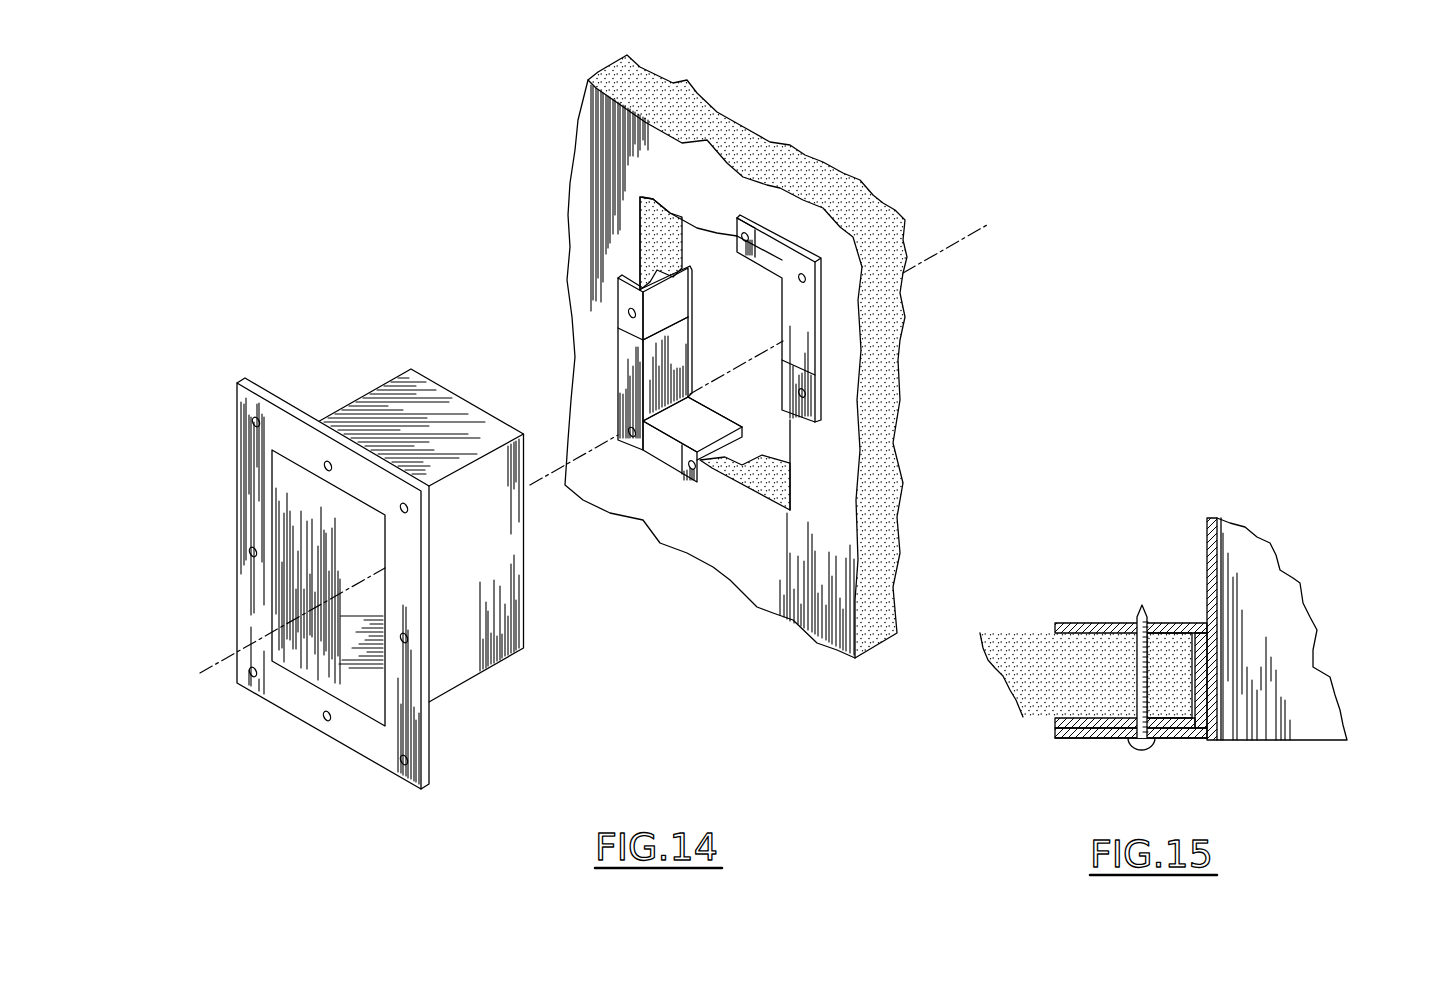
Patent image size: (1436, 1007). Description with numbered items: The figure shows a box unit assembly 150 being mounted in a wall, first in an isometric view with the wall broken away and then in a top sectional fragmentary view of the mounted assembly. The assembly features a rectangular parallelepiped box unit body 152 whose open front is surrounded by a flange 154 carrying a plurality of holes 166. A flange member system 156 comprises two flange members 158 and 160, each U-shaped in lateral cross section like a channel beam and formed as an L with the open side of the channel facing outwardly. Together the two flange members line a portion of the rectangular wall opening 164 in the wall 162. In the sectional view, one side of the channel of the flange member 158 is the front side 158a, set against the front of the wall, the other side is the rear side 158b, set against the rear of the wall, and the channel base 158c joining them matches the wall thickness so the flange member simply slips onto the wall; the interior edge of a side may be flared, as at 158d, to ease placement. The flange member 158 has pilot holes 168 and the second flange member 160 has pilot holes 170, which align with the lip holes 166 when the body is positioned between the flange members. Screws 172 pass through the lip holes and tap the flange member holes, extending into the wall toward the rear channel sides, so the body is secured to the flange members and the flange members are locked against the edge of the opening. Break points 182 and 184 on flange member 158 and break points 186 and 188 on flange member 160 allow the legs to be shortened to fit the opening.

In FIG. 14, the box unit assembly 150 is at (634, 686).
In FIG. 15, the box unit assembly 150 is at (1263, 767).
In FIG. 14, the box unit body 152 is at (450, 670).
In FIG. 15, the box unit body 152 is at (1298, 620).
In FIG. 14, the flange 154 is at (360, 735).
In FIG. 15, the flange 154 is at (1090, 734).
In FIG. 14, the flange member system 156 is at (723, 497).
In FIG. 14, the flange member 158 is at (634, 387).
In FIG. 15, the flange member front side 158a is at (1058, 732).
In FIG. 15, the flange member rear side 158b is at (1122, 622).
In FIG. 15, the channel base 158c is at (1200, 653).
In FIG. 15, the flared edge 158d is at (1058, 722).
In FIG. 14, the second flange member 160 is at (782, 253).
In FIG. 14, the wall 162 is at (795, 553).
In FIG. 15, the wall 162 is at (1020, 646).
In FIG. 14, the wall opening 164 is at (760, 466).
In FIG. 15, the wall opening 164 is at (1200, 688).
In FIG. 14, the holes 166 is at (321, 716).
In FIG. 14, the pilot holes 168 is at (643, 452).
In FIG. 14, the pilot holes 170 is at (804, 283).
In FIG. 15, the screws 172 is at (1144, 752).
In FIG. 14, the break point 182 is at (677, 322).
In FIG. 14, the break point 184 is at (705, 428).
In FIG. 14, the break point 186 is at (797, 362).
In FIG. 14, the break point 188 is at (737, 217).